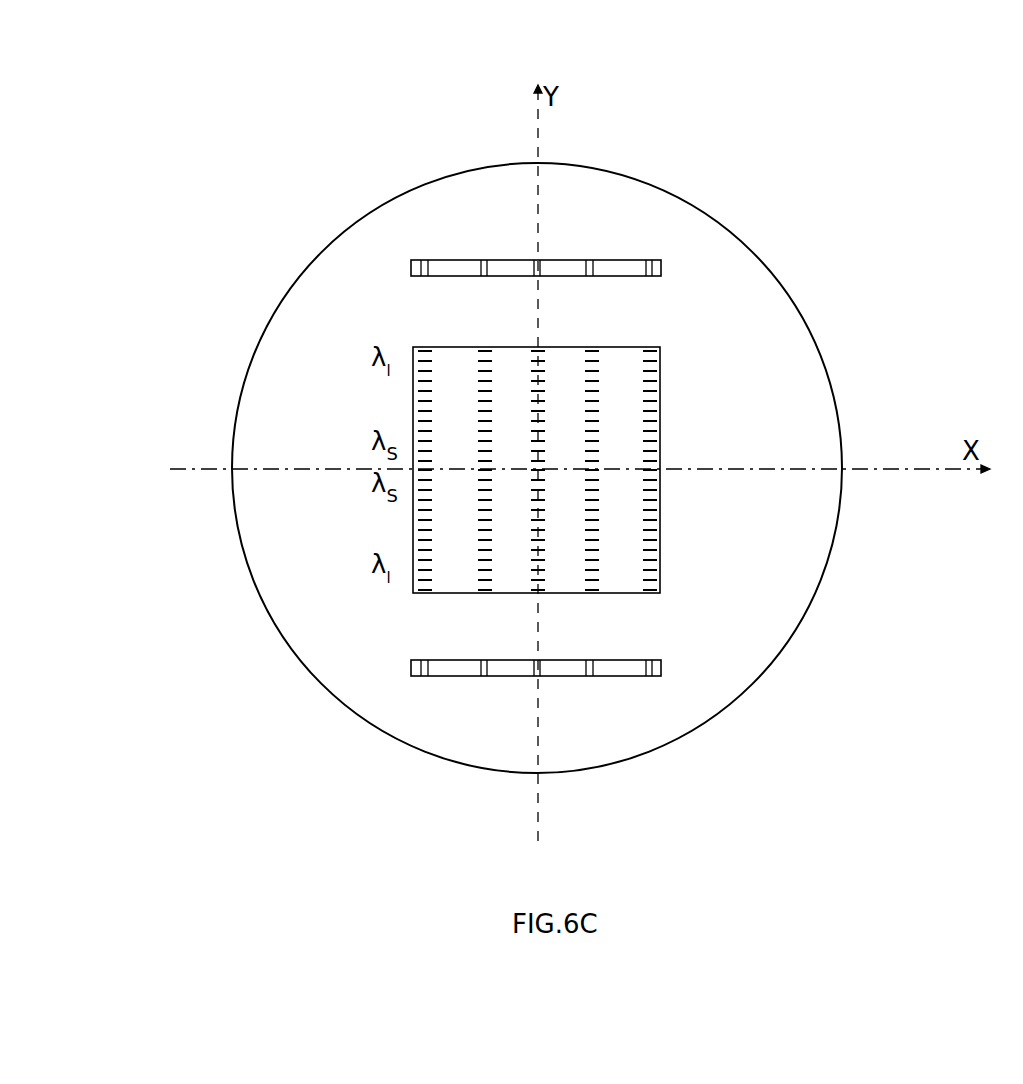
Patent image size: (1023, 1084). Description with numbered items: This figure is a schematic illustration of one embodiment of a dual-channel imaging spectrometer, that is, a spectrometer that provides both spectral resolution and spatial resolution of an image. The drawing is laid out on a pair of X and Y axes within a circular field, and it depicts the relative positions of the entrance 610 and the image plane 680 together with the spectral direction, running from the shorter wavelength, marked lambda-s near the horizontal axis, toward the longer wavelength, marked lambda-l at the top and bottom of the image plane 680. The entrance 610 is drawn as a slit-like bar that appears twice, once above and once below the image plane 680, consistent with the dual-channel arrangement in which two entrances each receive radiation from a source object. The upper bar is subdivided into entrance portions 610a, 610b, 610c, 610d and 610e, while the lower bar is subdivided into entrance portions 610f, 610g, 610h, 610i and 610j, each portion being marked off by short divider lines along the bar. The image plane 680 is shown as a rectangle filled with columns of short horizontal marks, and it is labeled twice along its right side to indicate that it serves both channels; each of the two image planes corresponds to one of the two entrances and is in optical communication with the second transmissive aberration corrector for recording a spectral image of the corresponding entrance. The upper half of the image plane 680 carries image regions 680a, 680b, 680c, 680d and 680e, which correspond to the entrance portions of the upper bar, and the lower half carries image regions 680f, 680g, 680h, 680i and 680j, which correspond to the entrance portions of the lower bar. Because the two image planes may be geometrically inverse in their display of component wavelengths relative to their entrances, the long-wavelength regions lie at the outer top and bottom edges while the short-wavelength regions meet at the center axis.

The electrode bar 610 is at (663, 268).
The electrode segment 610a is at (420, 258).
The electrode segment 610b is at (484, 258).
The electrode segment 610c is at (537, 258).
The electrode segment 610d is at (592, 258).
The electrode segment 610e is at (650, 258).
The electrode segment 610f is at (649, 678).
The electrode segment 610g is at (593, 678).
The electrode segment 610h is at (538, 678).
The electrode segment 610i is at (482, 678).
The electrode segment 610j is at (421, 678).
The grating region 680 is at (662, 400).
The grating column 680a is at (662, 349).
The grating column 680b is at (600, 347).
The grating column 680c is at (540, 347).
The grating column 680d is at (485, 347).
The grating column 680e is at (421, 347).
The grating column 680f is at (418, 593).
The grating column 680g is at (486, 593).
The grating column 680h is at (540, 593).
The grating column 680i is at (600, 595).
The grating column 680j is at (660, 593).